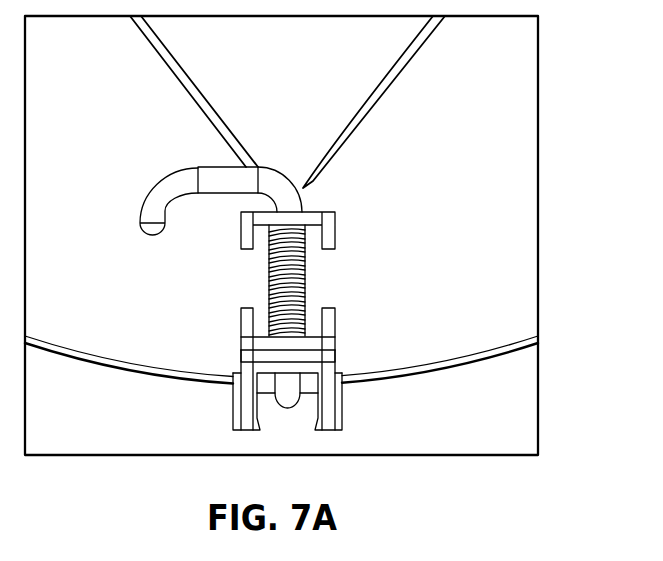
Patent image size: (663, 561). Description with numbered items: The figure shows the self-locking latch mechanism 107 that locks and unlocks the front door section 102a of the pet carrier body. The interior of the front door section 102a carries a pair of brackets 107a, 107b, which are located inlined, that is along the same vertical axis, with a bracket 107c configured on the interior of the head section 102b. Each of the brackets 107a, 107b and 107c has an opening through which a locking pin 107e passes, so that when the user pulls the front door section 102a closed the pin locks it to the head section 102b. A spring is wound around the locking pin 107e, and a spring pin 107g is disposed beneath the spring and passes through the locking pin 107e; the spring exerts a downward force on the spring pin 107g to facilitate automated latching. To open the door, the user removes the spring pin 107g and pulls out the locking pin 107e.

The front door section 102a is at (517, 193).
The head section 102b is at (520, 432).
The self-locking latch mechanism 107 is at (270, 158).
The bracket 107a is at (326, 228).
The bracket 107b is at (332, 332).
The bracket 107c is at (332, 415).
The locking pin 107e is at (157, 200).
The spring pin 107g is at (285, 338).